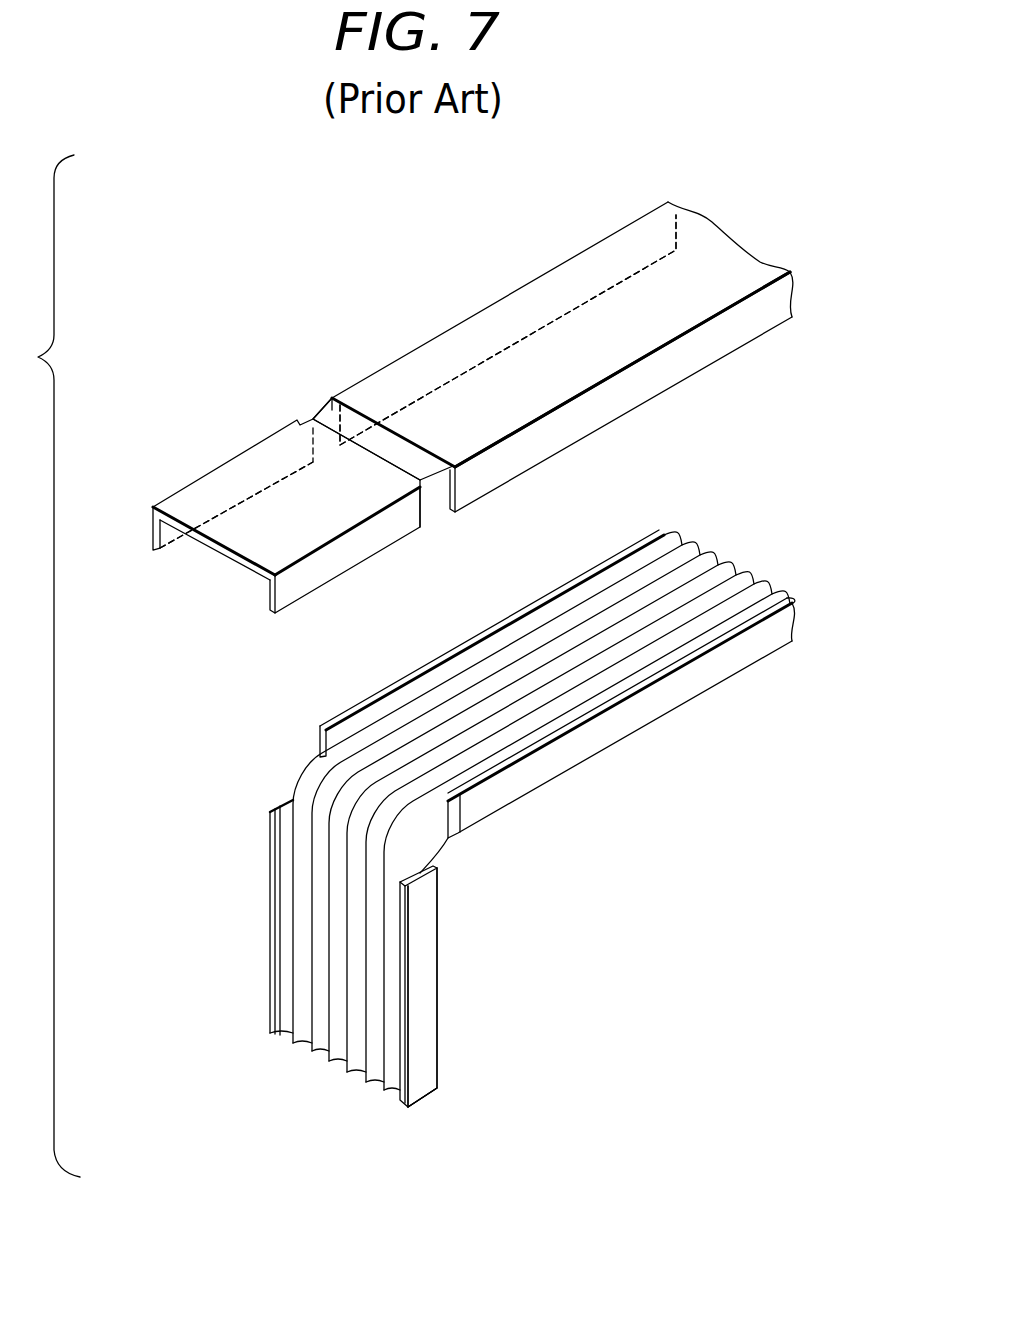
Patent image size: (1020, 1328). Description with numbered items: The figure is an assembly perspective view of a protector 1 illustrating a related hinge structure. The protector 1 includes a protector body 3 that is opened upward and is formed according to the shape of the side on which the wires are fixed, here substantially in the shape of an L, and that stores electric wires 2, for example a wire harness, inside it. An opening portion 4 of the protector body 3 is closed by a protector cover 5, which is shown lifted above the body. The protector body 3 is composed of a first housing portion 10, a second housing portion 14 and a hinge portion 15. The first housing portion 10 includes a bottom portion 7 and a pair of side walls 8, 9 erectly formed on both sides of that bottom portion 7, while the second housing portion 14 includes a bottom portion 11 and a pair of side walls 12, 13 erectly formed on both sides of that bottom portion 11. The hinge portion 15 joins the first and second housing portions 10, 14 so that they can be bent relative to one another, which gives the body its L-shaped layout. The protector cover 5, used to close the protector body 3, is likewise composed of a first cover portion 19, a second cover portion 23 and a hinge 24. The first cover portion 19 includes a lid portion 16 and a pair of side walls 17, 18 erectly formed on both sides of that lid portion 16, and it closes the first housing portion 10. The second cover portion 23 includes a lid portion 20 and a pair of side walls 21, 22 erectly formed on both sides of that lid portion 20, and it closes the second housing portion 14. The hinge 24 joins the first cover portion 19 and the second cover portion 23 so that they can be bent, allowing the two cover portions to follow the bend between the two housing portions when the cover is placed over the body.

The protector 1 is at (143, 630).
The electric wires 2 is at (320, 975).
The protector body 3 is at (474, 830).
The opening portion 4 is at (520, 620).
The protector cover 5 is at (215, 578).
The bottom portion 7 is at (621, 735).
The side wall 8 is at (620, 720).
The side wall 9 is at (557, 603).
The first housing portion 10 is at (597, 550).
The bottom portion 11 is at (450, 950).
The side wall 12 is at (427, 1017).
The side wall 13 is at (285, 940).
The second housing portion 14 is at (442, 1105).
The hinge portion 15 is at (445, 845).
The lid portion 16 is at (605, 300).
The side wall 17 is at (610, 395).
The side wall 18 is at (487, 335).
The first cover portion 19 is at (722, 206).
The lid portion 20 is at (300, 487).
The side wall 21 is at (348, 565).
The side wall 22 is at (152, 522).
The second cover portion 23 is at (200, 445).
The hinge 24 is at (353, 440).